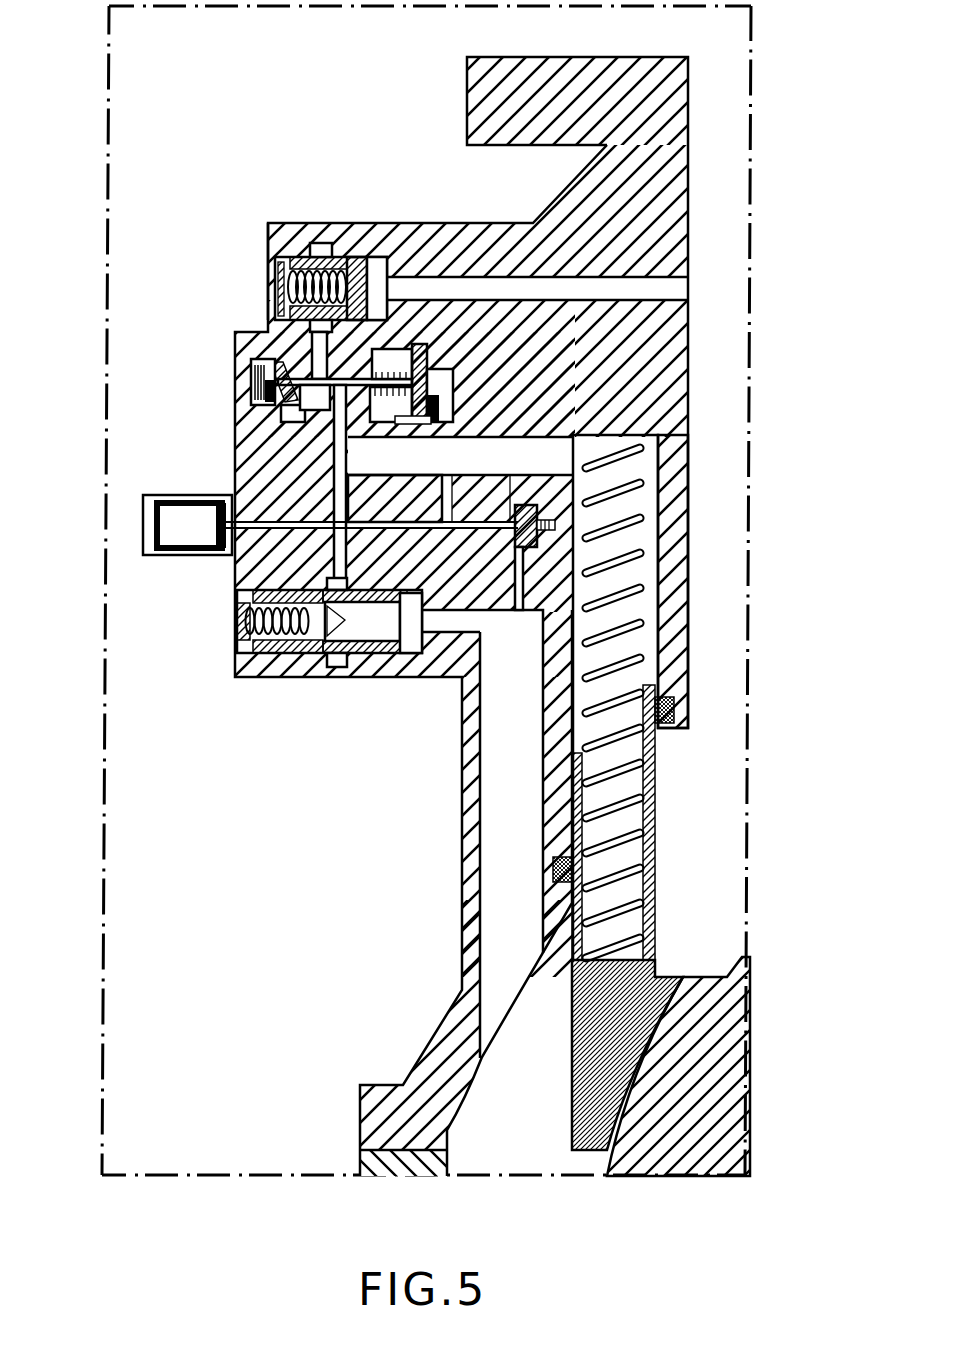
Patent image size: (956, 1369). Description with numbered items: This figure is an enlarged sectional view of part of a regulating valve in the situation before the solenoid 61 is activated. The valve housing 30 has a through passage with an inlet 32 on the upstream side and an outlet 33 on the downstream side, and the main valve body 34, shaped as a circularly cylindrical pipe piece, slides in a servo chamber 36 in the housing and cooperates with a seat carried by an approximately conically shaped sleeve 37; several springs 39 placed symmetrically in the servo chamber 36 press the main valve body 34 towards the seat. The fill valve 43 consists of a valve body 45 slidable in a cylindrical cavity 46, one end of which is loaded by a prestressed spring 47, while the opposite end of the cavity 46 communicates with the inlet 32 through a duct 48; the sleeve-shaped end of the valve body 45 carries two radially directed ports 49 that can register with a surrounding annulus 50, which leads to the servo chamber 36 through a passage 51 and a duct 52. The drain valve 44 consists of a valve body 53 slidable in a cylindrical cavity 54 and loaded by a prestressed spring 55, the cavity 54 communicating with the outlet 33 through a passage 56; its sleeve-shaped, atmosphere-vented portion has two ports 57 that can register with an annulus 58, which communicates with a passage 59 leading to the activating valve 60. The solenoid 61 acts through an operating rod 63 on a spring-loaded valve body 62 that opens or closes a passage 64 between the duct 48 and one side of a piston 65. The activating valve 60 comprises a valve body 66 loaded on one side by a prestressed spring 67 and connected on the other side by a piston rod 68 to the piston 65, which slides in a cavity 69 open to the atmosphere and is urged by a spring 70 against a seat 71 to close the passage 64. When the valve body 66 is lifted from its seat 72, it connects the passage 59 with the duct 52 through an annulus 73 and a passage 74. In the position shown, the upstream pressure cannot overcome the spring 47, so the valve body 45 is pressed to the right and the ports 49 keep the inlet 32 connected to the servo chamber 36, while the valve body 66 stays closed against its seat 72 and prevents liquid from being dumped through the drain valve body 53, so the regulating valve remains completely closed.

The housing 30 is at (665, 345).
The inlet 32 is at (527, 1155).
The outlet 33 is at (725, 152).
The main valve body 34 is at (590, 1070).
The servo chamber 36 is at (645, 537).
The sleeve 37 is at (650, 1145).
The springs 39 is at (630, 600).
The fill valve 43 is at (230, 657).
The drain valve 44 is at (262, 256).
The valve body 45 is at (290, 655).
The cylindrical cavity 46 is at (410, 655).
The prestressed spring 47 is at (238, 628).
The duct 48 is at (495, 878).
The ports 49 is at (346, 608).
The annulus 50 is at (337, 668).
The passage 51 is at (345, 548).
The duct 52 is at (520, 450).
The valve body 53 is at (355, 266).
The cylindrical cavity 54 is at (378, 275).
The prestressed spring 55 is at (283, 292).
The passage 56 is at (510, 290).
The ports 57 is at (312, 262).
The annulus 58 is at (337, 243).
The passage 59 is at (322, 355).
The activating valve 60 is at (248, 364).
The solenoid 61 is at (185, 505).
The valve body 62 is at (518, 596).
The operating rod 63 is at (258, 520).
The passage 64 is at (450, 506).
The piston 65 is at (426, 352).
The valve body 66 is at (260, 398).
The prestressed spring 67 is at (254, 378).
The piston rod 68 is at (385, 425).
The cavity 69 is at (418, 426).
The spring 70 is at (394, 348).
The seat 71 is at (441, 396).
The seat 72 is at (287, 424).
The annulus 73 is at (283, 360).
The passage 74 is at (312, 412).